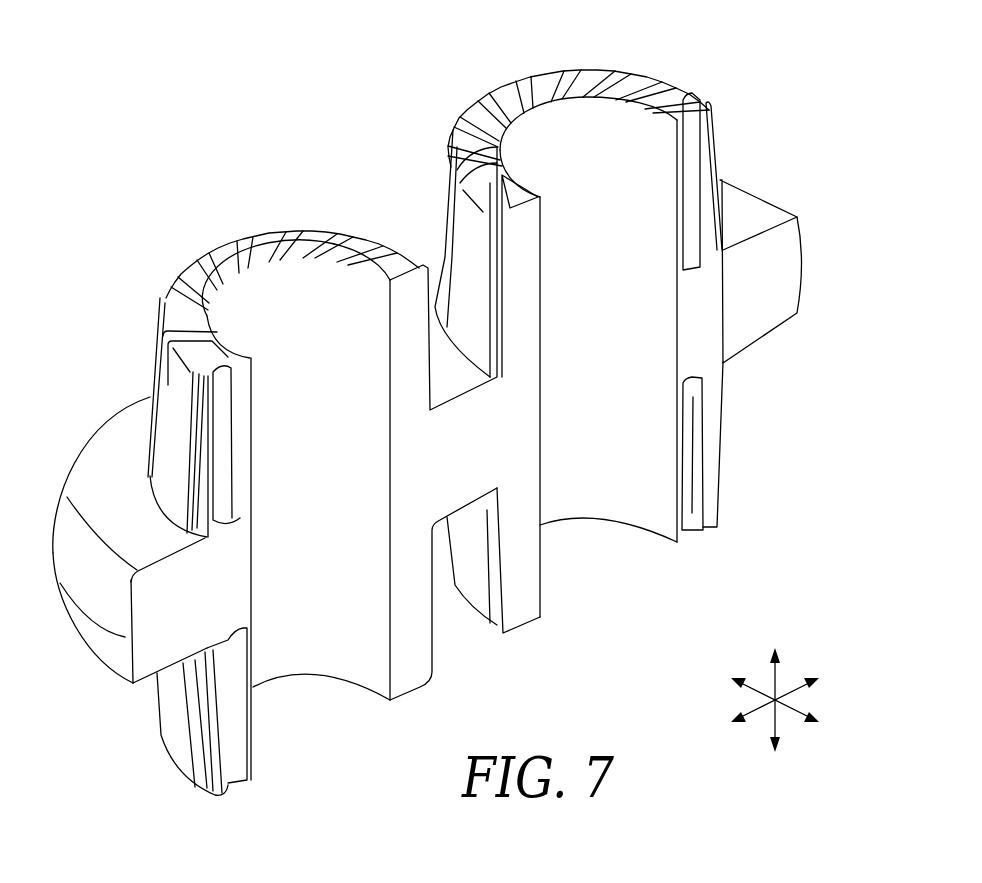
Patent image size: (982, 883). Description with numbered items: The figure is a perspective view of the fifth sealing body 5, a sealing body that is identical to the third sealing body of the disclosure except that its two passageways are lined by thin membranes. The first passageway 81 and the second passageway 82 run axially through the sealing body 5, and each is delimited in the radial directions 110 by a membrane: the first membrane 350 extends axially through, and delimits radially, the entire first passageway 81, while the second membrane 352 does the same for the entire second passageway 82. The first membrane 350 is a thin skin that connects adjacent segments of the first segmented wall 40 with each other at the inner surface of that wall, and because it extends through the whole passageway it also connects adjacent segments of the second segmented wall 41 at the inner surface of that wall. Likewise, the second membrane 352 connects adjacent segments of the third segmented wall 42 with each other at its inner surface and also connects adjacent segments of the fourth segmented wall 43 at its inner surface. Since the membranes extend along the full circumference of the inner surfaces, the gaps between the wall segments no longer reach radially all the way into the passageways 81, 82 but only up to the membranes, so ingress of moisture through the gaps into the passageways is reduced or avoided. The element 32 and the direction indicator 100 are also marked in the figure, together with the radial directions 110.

The fifth sealing body 5 is at (158, 188).
The lobe 32 is at (108, 450).
The first segmented wall 40 is at (235, 408).
The second segmented wall 41 is at (242, 733).
The third segmented wall 42 is at (685, 197).
The fourth segmented wall 43 is at (686, 450).
The first passageway 81 is at (326, 724).
The second passageway 82 is at (604, 574).
The first axis 100 is at (778, 670).
The radial directions 110 is at (795, 710).
The first membrane 350 is at (293, 283).
The second membrane 352 is at (622, 140).